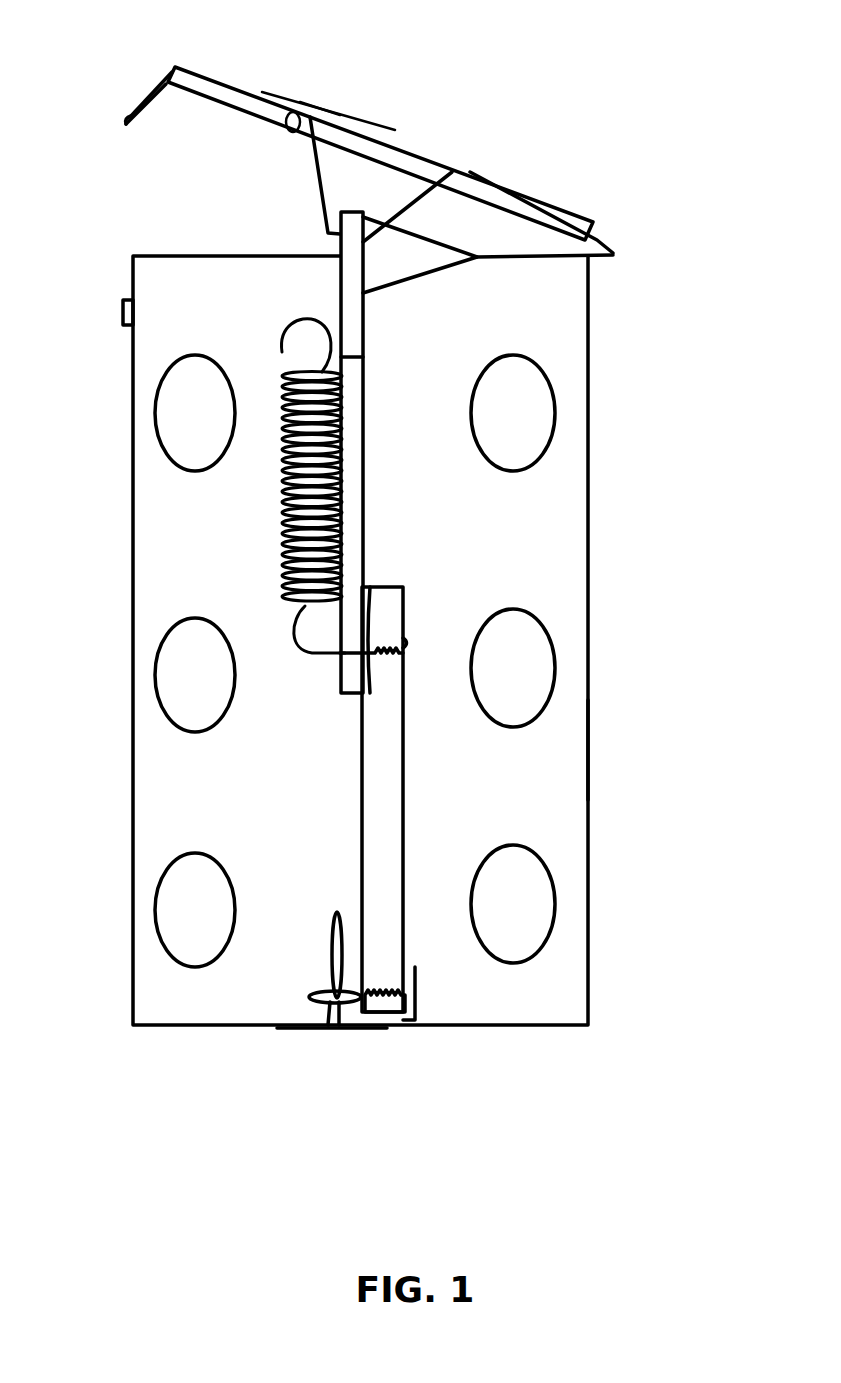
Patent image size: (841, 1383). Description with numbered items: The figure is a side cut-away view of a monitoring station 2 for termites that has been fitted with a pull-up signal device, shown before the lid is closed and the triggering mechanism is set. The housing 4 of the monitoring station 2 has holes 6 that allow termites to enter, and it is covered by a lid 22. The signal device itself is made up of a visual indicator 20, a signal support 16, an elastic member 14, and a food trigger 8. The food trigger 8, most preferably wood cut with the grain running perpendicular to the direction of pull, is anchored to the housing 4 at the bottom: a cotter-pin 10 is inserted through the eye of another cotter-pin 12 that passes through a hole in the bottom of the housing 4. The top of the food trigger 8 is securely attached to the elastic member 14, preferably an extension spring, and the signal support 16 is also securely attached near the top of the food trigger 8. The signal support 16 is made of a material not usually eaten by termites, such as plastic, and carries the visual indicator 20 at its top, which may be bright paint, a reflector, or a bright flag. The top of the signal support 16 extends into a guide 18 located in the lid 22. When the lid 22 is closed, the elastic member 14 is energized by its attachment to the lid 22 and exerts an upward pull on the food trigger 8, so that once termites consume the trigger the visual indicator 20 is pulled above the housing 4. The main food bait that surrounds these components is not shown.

The monitoring station 2 is at (587, 590).
The housing 4 is at (588, 753).
The holes 6 is at (517, 645).
The food trigger 8 is at (386, 825).
The cotter-pin 10 is at (325, 1003).
The cotter-pin 12 is at (337, 1037).
The elastic member 14 is at (296, 575).
The signal support 16 is at (355, 504).
The guide 18 is at (385, 197).
The visual indicator 20 is at (413, 258).
The lid 22 is at (227, 100).